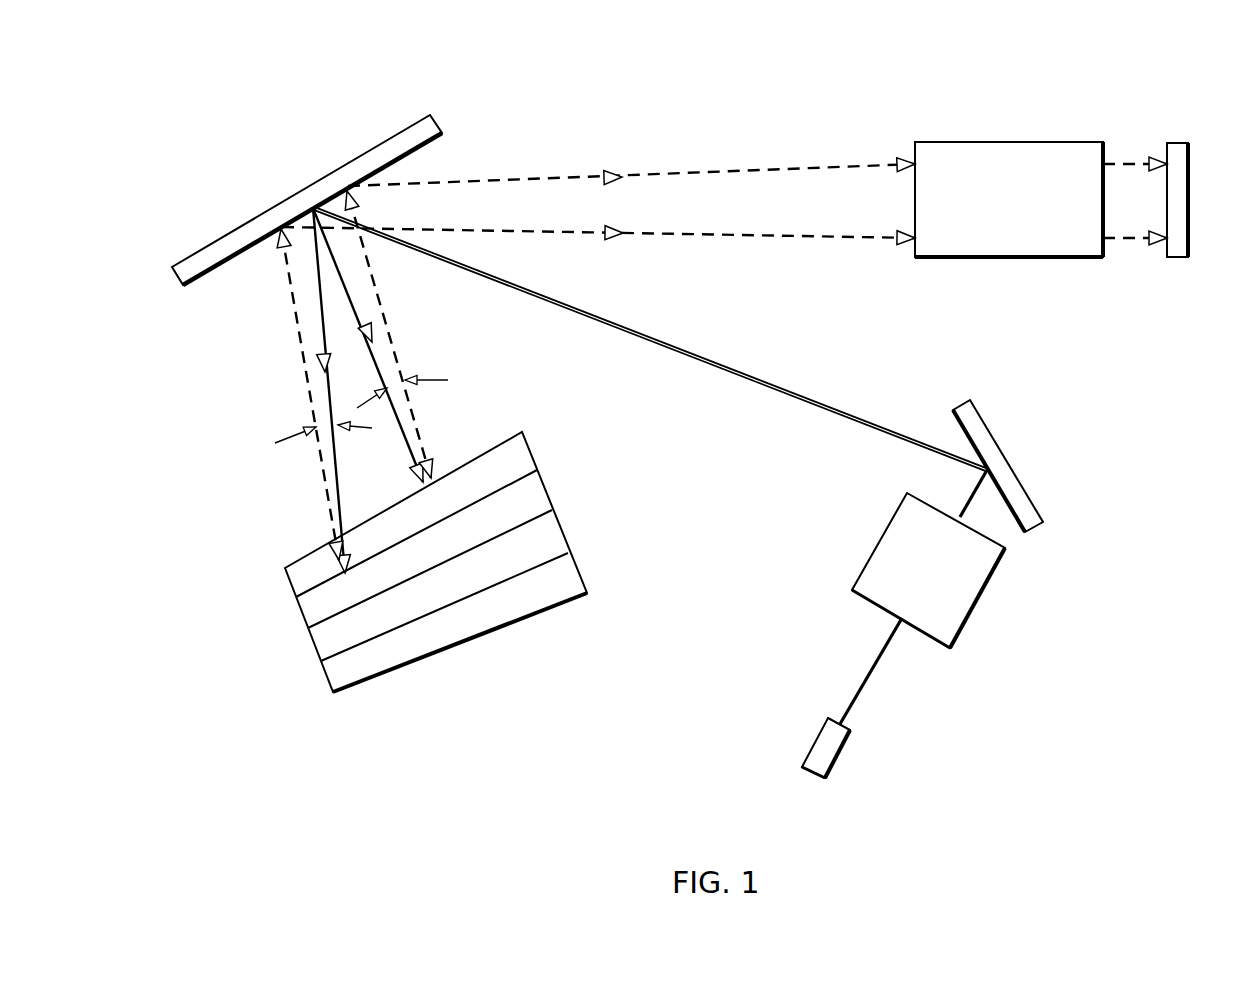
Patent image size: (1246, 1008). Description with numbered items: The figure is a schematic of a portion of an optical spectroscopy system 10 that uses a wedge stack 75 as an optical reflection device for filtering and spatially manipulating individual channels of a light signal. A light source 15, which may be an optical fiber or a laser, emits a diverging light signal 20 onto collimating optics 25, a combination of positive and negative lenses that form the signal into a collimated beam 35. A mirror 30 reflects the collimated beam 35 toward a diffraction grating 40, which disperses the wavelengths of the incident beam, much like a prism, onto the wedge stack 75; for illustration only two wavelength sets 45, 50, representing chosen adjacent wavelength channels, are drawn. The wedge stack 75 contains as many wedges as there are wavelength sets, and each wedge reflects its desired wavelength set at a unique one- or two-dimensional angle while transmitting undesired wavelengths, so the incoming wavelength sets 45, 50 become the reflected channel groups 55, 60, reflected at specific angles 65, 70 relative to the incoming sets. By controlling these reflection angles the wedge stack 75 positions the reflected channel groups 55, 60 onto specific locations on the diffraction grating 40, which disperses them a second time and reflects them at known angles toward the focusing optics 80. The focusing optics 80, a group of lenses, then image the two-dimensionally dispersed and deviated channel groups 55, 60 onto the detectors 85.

The optical spectroscopy system 10 is at (636, 98).
The light source 15 is at (830, 752).
The light signal 20 is at (878, 672).
The collimating optics 25 is at (965, 573).
The mirror 30 is at (1000, 467).
The collimated beam 35 is at (742, 372).
The diffraction grating 40 is at (290, 203).
The first wavelength set 45 is at (325, 387).
The second wavelength set 50 is at (375, 348).
The first reflected channel group 55 is at (310, 405).
The second reflected channel group 60 is at (650, 177).
The first reflection angle 65 is at (323, 430).
The second reflection angle 70 is at (400, 388).
The wedge stack 75 is at (258, 655).
The focusing optics 80 is at (990, 160).
The detectors 85 is at (1175, 160).